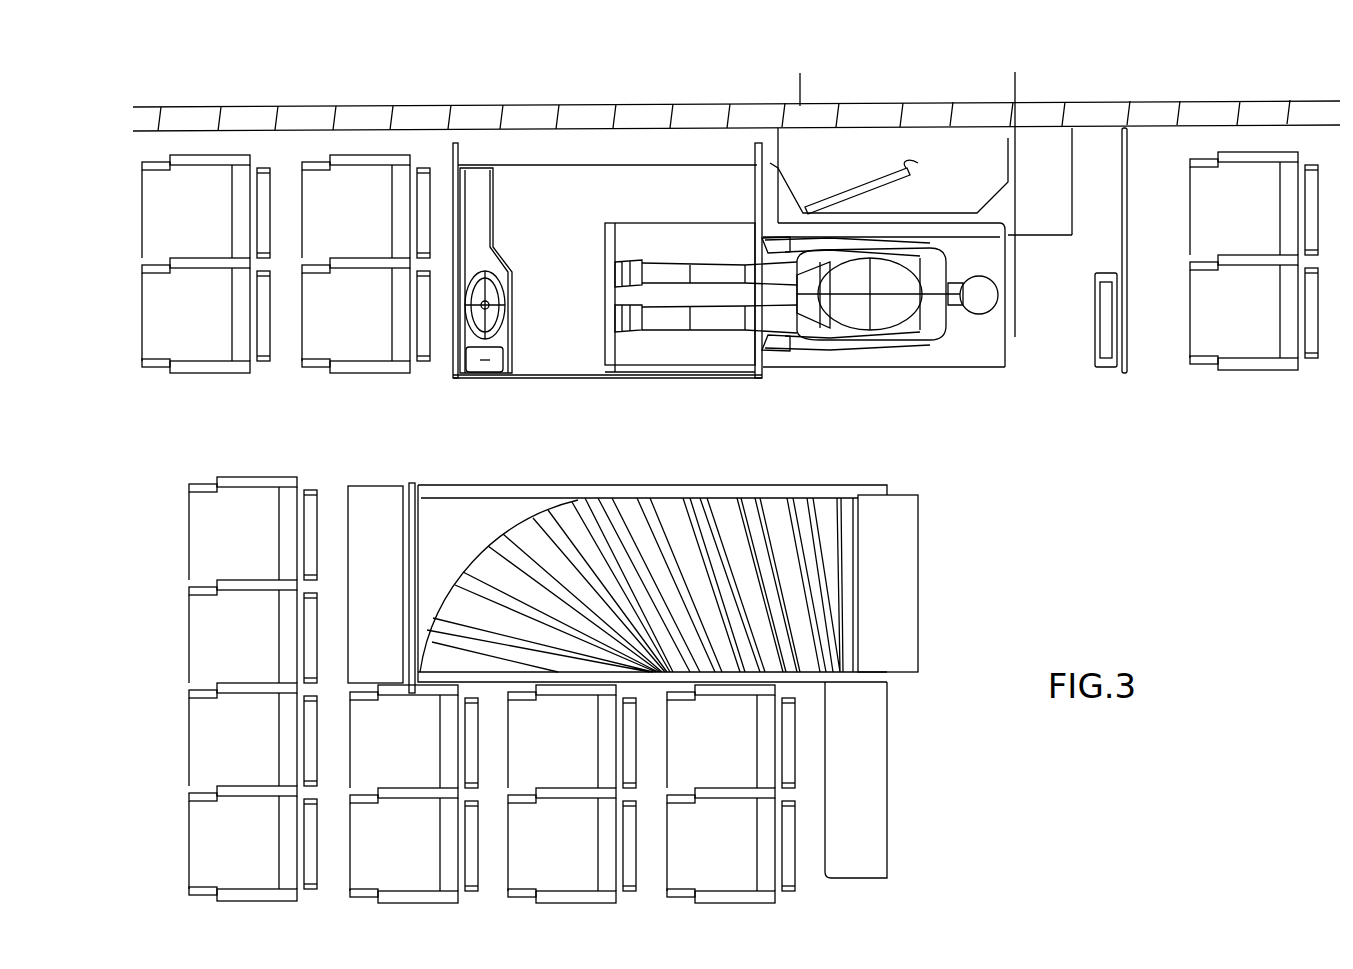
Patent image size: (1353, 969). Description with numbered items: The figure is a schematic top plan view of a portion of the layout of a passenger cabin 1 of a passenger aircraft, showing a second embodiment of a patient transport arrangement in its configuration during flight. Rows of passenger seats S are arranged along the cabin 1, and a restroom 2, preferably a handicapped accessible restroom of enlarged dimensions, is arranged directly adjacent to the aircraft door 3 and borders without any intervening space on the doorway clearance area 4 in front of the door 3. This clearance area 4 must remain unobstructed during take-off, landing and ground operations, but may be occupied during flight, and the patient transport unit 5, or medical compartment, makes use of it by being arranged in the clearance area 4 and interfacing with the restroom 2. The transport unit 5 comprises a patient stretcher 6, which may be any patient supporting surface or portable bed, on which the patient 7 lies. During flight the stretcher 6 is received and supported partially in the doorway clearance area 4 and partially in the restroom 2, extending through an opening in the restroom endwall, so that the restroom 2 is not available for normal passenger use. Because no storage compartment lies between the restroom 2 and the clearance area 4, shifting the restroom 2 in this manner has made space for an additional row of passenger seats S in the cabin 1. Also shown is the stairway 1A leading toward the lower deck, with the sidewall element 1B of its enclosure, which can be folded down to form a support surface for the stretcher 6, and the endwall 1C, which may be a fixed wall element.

The passenger cabin 1 is at (360, 85).
The restroom 2 is at (549, 190).
The aircraft door 3 is at (877, 187).
The doorway clearance area 4 is at (1066, 319).
The patient transport unit 5 is at (1010, 378).
The patient stretcher 6 is at (952, 348).
The patient 7 is at (671, 270).
The passenger seats S is at (322, 348).
The stairway 1A is at (918, 590).
The sidewall element 1B is at (484, 497).
The endwall 1C is at (413, 484).